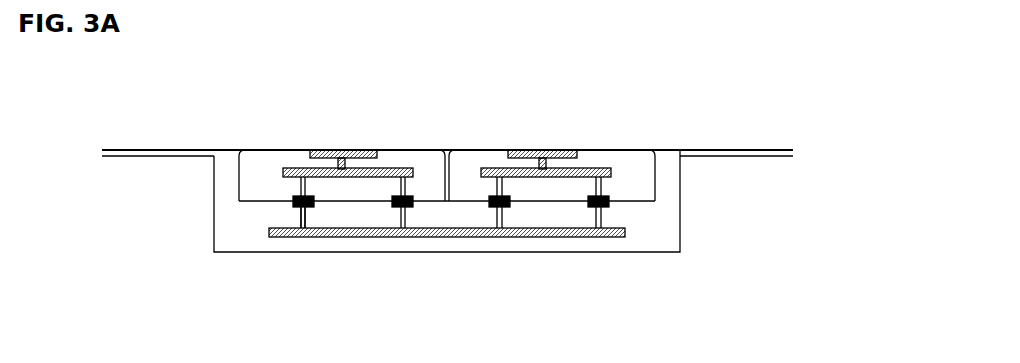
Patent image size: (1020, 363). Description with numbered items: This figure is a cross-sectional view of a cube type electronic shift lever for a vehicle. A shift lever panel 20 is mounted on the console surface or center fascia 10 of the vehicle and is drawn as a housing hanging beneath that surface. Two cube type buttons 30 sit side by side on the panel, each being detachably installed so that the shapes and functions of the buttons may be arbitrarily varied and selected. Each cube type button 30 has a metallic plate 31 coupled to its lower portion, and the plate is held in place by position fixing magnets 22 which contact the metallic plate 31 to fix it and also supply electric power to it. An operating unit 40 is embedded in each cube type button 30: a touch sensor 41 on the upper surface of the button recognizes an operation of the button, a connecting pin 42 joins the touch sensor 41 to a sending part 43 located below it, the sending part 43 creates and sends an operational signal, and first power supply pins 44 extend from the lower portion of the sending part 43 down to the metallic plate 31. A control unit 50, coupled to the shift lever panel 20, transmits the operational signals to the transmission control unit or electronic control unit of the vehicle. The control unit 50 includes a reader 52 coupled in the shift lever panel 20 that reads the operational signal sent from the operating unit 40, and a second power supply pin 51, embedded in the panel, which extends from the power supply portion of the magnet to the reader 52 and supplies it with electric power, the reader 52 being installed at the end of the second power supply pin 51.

The center fascia 10 is at (710, 151).
The shift lever panel 20 is at (230, 235).
The position fixing magnet 22 is at (398, 209).
The cube type button 30 is at (261, 149).
The metallic plate 31 is at (296, 199).
The operating unit 40 is at (348, 147).
The touch sensor 41 is at (314, 150).
The connecting pin 42 is at (339, 158).
The sending part 43 is at (369, 153).
The first power supply pin 44 is at (317, 92).
The control unit 50 is at (333, 262).
The second power supply pin 51 is at (303, 221).
The reader 52 is at (313, 237).